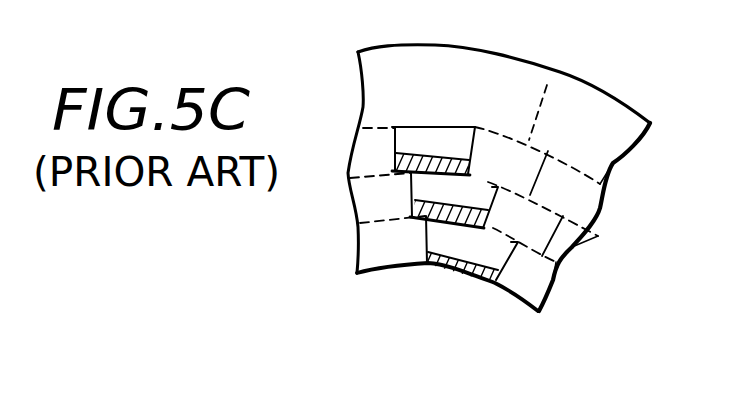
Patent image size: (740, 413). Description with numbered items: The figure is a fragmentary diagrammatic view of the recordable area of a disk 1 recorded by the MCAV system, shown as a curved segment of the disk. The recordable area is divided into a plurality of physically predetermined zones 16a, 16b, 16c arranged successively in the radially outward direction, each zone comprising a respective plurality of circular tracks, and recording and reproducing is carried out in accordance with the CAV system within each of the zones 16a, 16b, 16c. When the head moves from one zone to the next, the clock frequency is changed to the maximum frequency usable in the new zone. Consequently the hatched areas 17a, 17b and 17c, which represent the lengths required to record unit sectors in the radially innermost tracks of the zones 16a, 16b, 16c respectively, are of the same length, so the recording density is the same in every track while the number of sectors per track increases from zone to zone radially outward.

The disk 1 is at (561, 71).
The zone 16a is at (544, 318).
The zone 16b is at (567, 282).
The zone 16c is at (622, 193).
The hatched area 17a is at (462, 276).
The hatched area 17b is at (432, 221).
The hatched area 17c is at (399, 170).